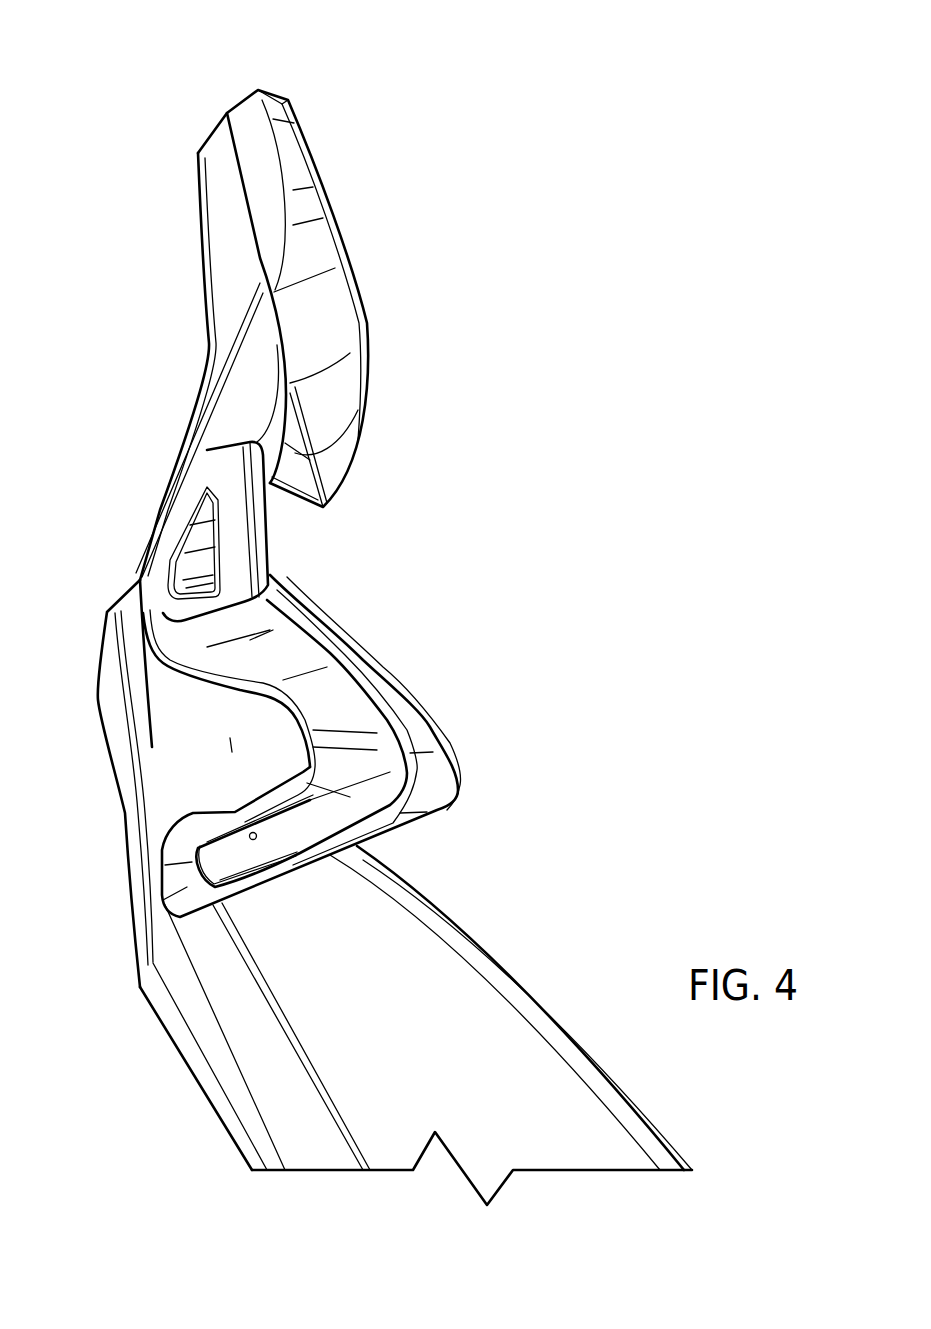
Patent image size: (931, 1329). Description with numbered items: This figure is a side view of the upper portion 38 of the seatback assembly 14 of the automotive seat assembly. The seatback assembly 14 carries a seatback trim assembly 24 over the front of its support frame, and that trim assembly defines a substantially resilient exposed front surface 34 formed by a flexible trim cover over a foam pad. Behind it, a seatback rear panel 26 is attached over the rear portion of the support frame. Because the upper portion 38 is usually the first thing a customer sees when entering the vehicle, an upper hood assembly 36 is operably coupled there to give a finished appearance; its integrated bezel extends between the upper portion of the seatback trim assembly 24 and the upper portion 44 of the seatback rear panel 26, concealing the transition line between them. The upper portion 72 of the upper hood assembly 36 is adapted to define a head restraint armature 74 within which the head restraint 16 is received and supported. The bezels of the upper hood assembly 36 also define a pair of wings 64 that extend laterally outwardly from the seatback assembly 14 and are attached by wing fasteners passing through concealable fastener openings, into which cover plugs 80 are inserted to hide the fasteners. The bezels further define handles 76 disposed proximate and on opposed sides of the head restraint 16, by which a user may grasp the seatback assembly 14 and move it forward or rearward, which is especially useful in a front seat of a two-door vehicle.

The seatback assembly 14 is at (672, 243).
The head restraint 16 is at (343, 247).
The seatback trim assembly 24 is at (465, 980).
The seatback rear panel 26 is at (188, 1043).
The exposed front surface 34 is at (660, 1130).
The upper hood assembly 36 is at (185, 151).
The upper portion of the seatback assembly 38 is at (345, 888).
The upper portion of the seatback rear panel 44 is at (106, 697).
The wings 64 is at (355, 792).
The upper portion of the upper hood assembly 72 is at (276, 96).
The head restraint armature 74 is at (212, 437).
The handles 76 is at (248, 538).
The cover plugs 80 is at (249, 837).